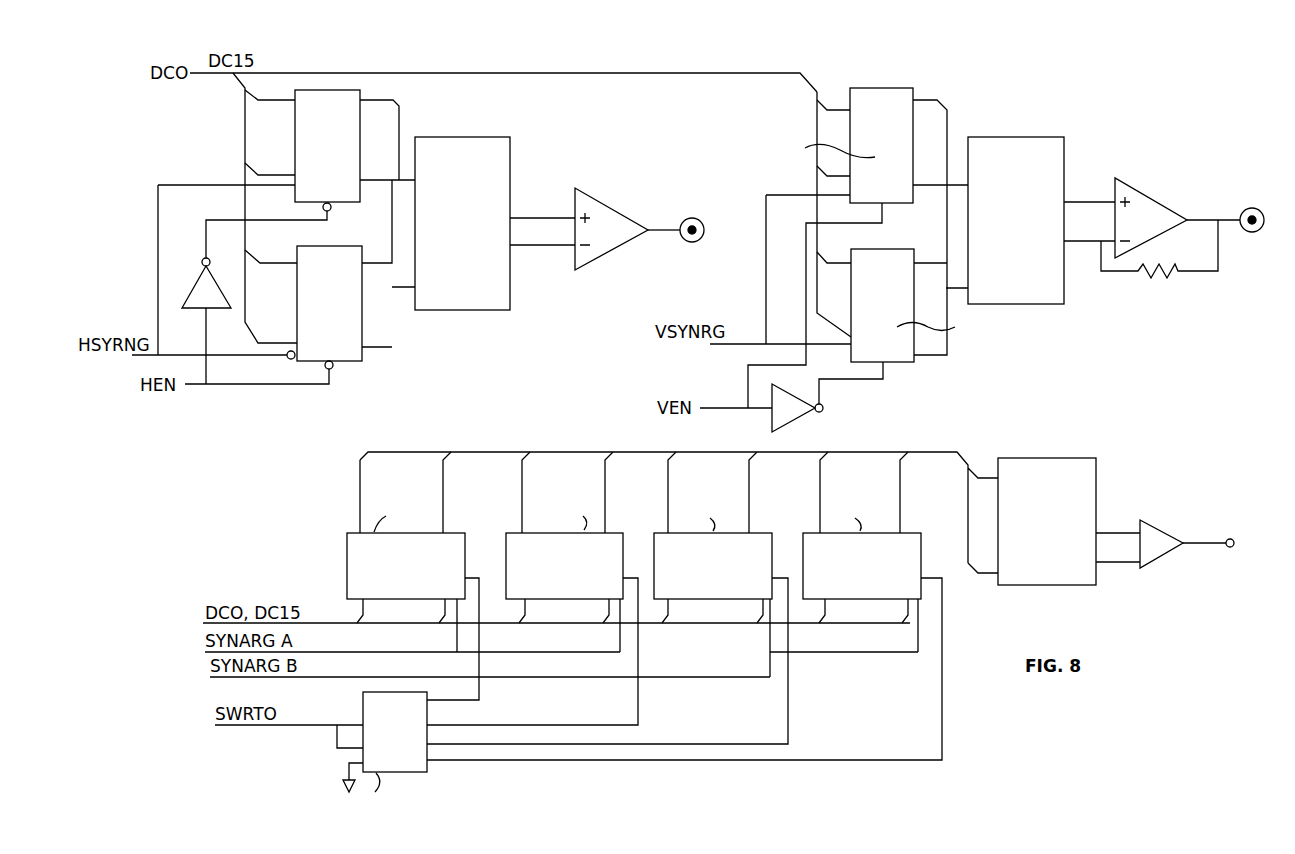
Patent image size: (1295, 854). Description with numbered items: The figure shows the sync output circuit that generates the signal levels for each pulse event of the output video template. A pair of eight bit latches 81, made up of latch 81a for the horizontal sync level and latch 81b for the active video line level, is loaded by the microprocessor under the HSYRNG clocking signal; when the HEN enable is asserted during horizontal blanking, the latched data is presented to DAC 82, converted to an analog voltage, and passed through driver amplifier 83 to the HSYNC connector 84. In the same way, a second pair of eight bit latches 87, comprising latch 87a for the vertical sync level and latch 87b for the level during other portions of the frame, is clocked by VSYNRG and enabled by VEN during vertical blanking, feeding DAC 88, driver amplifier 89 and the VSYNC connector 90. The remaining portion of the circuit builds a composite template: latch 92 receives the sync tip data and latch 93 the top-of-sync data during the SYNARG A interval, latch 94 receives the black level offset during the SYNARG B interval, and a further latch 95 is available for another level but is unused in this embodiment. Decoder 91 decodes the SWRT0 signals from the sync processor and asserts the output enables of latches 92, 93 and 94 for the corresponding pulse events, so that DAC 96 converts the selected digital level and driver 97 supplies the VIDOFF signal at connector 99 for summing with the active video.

The pair of eight bit latches 81 is at (372, 228).
The eight bit latch 81a is at (332, 130).
The eight bit latch 81b is at (345, 334).
The DAC 82 is at (479, 219).
The driver amplifier 83 is at (644, 279).
The standard connector 84 is at (714, 268).
The pair of eight bit latches 87 is at (927, 234).
The eight bit latch 87a is at (826, 145).
The eight bit latch 87b is at (933, 305).
The DAC 88 is at (1039, 266).
The driver amplifier 89 is at (1182, 196).
The standard connector 90 is at (1282, 256).
The decoder 91 is at (414, 773).
The latch 92 is at (416, 567).
The latch 93 is at (572, 567).
The latch 94 is at (724, 567).
The latch 95 is at (872, 567).
The DAC 96 is at (1074, 552).
The driver 97 is at (1189, 588).
The connector 99 is at (1233, 546).